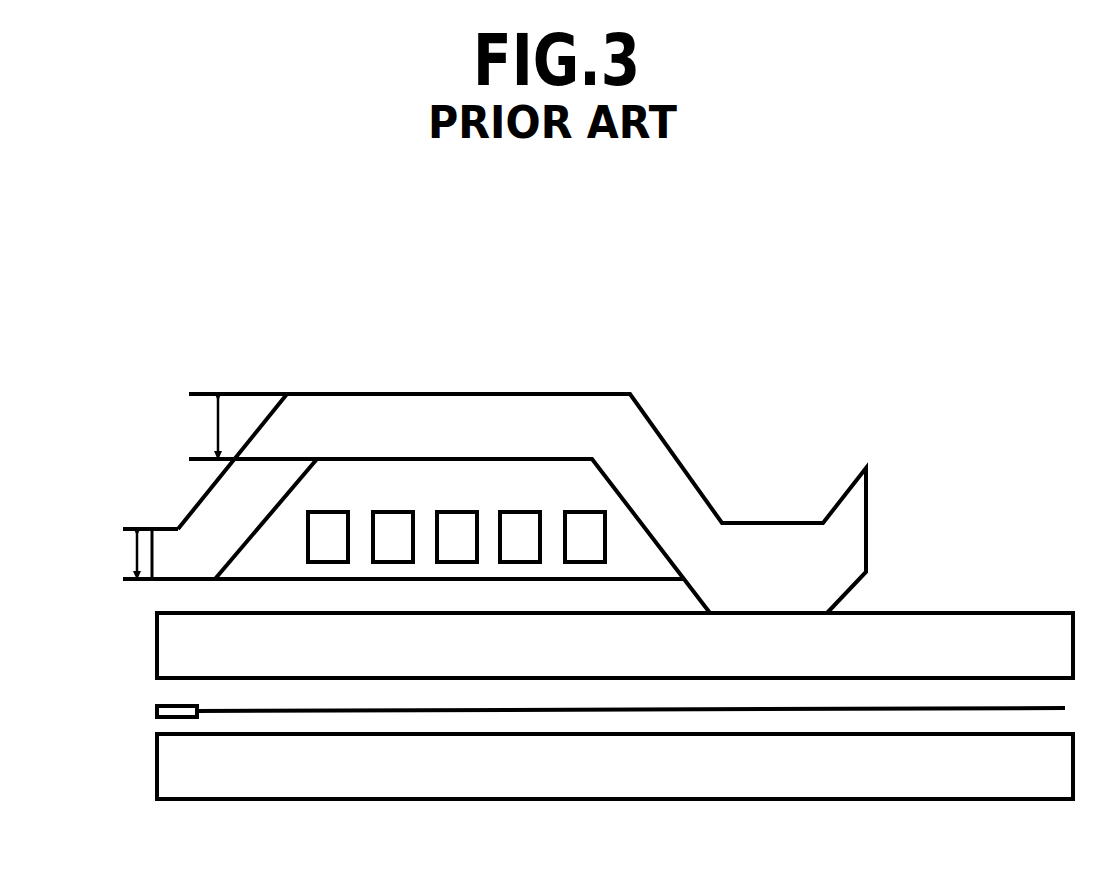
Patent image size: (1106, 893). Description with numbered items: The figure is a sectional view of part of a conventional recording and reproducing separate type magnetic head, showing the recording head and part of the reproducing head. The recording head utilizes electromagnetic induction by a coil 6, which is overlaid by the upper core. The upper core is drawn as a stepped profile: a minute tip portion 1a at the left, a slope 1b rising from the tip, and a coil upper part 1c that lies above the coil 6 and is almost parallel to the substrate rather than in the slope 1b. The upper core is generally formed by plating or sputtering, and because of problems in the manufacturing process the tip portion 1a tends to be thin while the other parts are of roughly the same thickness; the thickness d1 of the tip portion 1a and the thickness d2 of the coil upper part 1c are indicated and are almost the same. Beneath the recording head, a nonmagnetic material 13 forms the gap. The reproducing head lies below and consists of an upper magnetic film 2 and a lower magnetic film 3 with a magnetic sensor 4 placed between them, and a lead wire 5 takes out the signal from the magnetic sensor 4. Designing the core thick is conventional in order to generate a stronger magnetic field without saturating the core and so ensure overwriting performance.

The tip portion of upper core 1a is at (173, 547).
The slope of upper core 1b is at (237, 515).
The coil upper part of upper core 1c is at (355, 418).
The coil 6 is at (390, 513).
The nonmagnetic material 13 is at (178, 595).
The upper magnetic film 2 is at (172, 660).
The magnetic sensor 4 is at (170, 718).
The lead wire 5 is at (315, 712).
The lower magnetic film 3 is at (173, 779).
The thickness of tip portion of upper core d1 is at (137, 560).
The thickness of coil upper part of upper core d2 is at (210, 432).